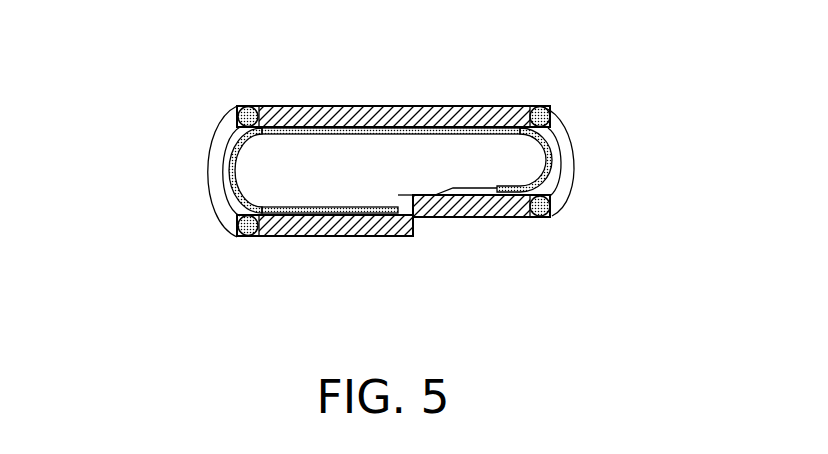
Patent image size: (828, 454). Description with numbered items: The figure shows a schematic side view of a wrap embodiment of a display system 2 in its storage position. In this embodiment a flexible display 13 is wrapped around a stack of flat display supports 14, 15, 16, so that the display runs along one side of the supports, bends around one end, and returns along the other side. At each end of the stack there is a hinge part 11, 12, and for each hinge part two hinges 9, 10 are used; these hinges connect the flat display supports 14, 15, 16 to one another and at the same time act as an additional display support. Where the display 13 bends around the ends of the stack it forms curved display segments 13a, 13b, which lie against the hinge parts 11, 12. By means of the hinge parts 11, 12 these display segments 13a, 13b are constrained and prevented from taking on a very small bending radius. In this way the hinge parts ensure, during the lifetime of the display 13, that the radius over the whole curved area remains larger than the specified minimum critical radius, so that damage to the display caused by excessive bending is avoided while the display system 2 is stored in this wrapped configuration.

The display system 2 is at (322, 98).
The hinge 9 is at (249, 106).
The hinge 10 is at (250, 238).
The hinge part 11 is at (220, 140).
The hinge part 12 is at (557, 186).
The display 13 is at (477, 127).
The display segment 13a is at (232, 188).
The display segment 13b is at (551, 143).
The flat display support 14 is at (392, 106).
The flat display support 15 is at (328, 227).
The flat display support 16 is at (463, 218).